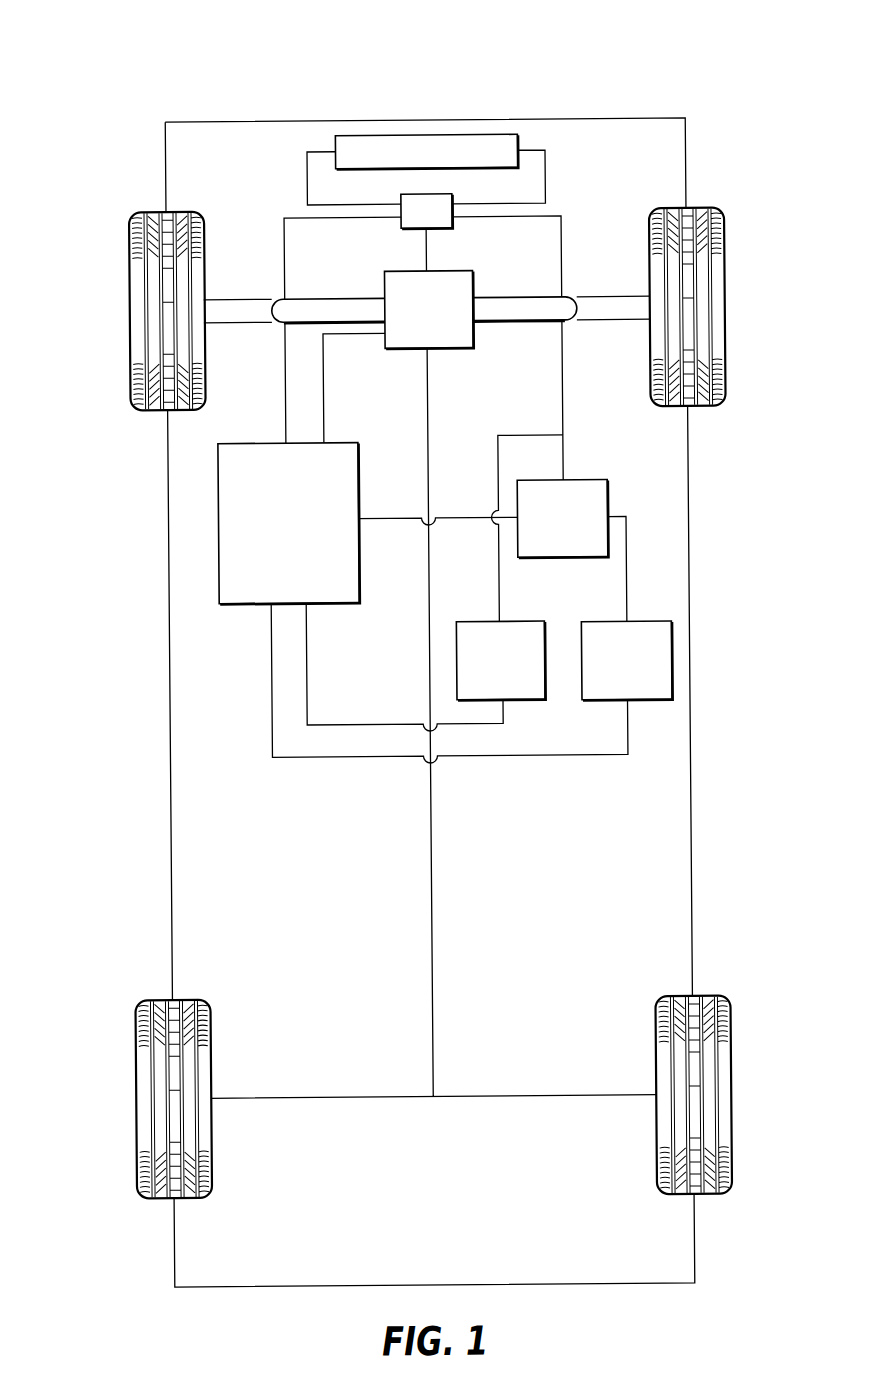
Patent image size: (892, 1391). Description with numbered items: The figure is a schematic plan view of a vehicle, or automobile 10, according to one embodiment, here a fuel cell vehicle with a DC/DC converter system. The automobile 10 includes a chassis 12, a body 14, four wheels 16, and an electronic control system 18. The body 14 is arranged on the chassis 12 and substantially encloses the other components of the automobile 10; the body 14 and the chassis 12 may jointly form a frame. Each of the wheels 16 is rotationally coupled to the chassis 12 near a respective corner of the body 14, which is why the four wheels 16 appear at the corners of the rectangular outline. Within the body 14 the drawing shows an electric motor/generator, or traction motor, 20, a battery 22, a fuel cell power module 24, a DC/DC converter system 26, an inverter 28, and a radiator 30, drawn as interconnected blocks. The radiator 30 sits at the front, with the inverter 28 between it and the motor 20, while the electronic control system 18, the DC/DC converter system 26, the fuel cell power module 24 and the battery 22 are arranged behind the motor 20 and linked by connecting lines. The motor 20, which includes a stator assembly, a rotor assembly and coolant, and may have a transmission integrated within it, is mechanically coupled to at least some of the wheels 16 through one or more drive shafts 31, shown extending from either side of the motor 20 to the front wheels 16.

The automobile 10 is at (712, 42).
The chassis 12 is at (430, 960).
The body 14 is at (187, 520).
The wheels 16 is at (131, 273).
The electronic control system 18 is at (274, 535).
The electric motor/generator 20 is at (416, 323).
The battery 22 is at (611, 675).
The fuel cell power module 24 is at (485, 674).
The DC/DC converter system 26 is at (548, 532).
The inverter 28 is at (416, 224).
The radiator 30 is at (374, 135).
The drive shafts 31 is at (276, 297).